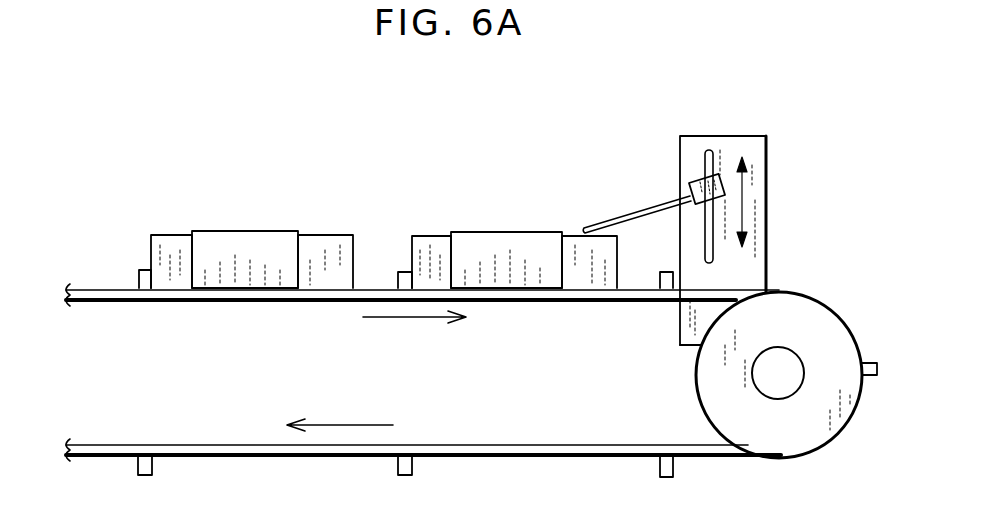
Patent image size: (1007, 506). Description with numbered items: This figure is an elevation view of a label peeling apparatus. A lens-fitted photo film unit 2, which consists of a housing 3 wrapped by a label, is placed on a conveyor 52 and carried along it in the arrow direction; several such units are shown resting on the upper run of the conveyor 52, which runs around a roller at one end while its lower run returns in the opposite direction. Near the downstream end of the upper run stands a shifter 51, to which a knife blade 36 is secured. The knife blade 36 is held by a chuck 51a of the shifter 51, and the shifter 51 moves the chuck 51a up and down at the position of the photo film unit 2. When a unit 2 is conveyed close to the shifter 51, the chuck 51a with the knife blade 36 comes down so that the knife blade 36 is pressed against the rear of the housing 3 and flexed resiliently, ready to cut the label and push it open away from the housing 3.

The lens-fitted photo film unit 2 is at (585, 273).
The housing 3 is at (171, 253).
The knife blade 36 is at (626, 213).
The shifter 51 is at (753, 130).
The chuck 51a is at (697, 185).
The conveyor 52 is at (520, 304).